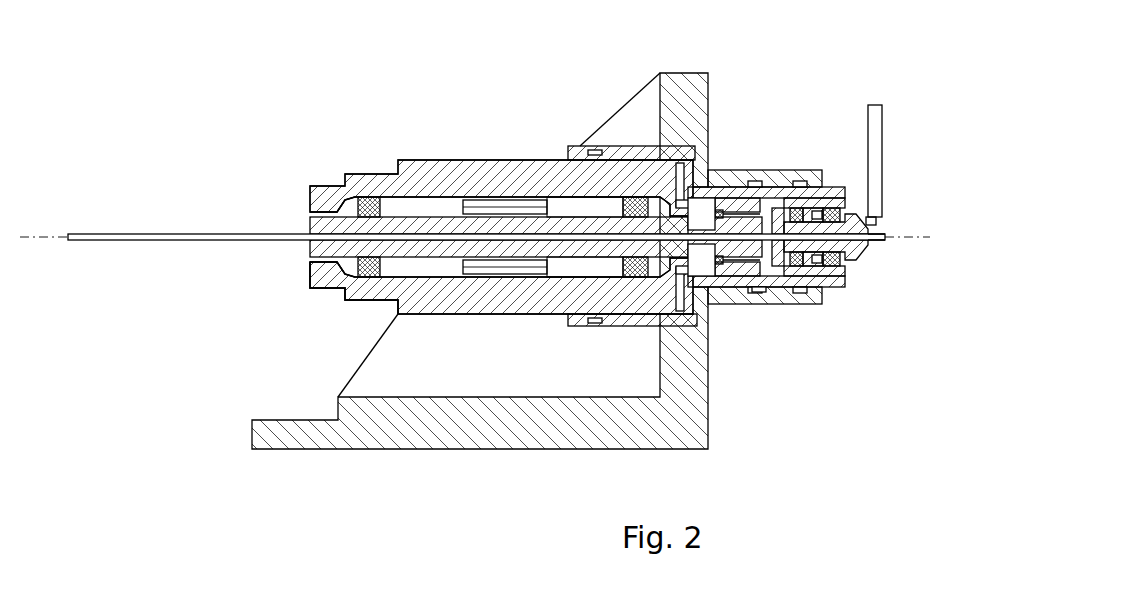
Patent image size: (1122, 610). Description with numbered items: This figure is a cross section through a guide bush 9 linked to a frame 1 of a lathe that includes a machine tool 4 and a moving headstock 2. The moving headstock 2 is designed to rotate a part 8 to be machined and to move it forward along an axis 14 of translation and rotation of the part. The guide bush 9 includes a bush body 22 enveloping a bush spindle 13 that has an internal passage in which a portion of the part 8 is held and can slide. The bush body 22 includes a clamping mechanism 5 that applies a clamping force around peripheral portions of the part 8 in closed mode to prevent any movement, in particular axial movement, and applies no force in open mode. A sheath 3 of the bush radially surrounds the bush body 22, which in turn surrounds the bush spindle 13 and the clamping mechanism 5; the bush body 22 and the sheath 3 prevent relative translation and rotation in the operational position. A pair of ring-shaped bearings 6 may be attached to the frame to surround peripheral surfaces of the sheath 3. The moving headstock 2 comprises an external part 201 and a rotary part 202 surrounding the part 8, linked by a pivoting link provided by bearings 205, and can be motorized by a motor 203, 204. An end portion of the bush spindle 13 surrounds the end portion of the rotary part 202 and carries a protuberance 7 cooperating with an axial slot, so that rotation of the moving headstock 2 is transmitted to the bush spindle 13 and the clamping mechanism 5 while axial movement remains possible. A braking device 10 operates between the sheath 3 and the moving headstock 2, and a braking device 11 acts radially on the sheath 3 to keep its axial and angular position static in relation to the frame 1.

The frame 1 is at (710, 73).
The moving headstock 2 is at (417, 150).
The sheath of the bush 3 is at (617, 105).
The machine tool 4 is at (882, 133).
The clamping mechanism 5 is at (868, 246).
The ring-shaped bearings 6 is at (808, 290).
The protuberance 7 is at (725, 205).
The part to be machined 8 is at (885, 234).
The guide bush 9 is at (708, 192).
The braking device 10 is at (595, 318).
The braking device 11 is at (759, 292).
The bush spindle 13 is at (830, 256).
The axis 14 is at (57, 237).
The bush body 22 is at (820, 272).
The external part 201 is at (367, 293).
The rotary part 202 is at (453, 250).
The motor 203 is at (503, 272).
The motor 204 is at (525, 264).
The bearings 205 is at (352, 268).